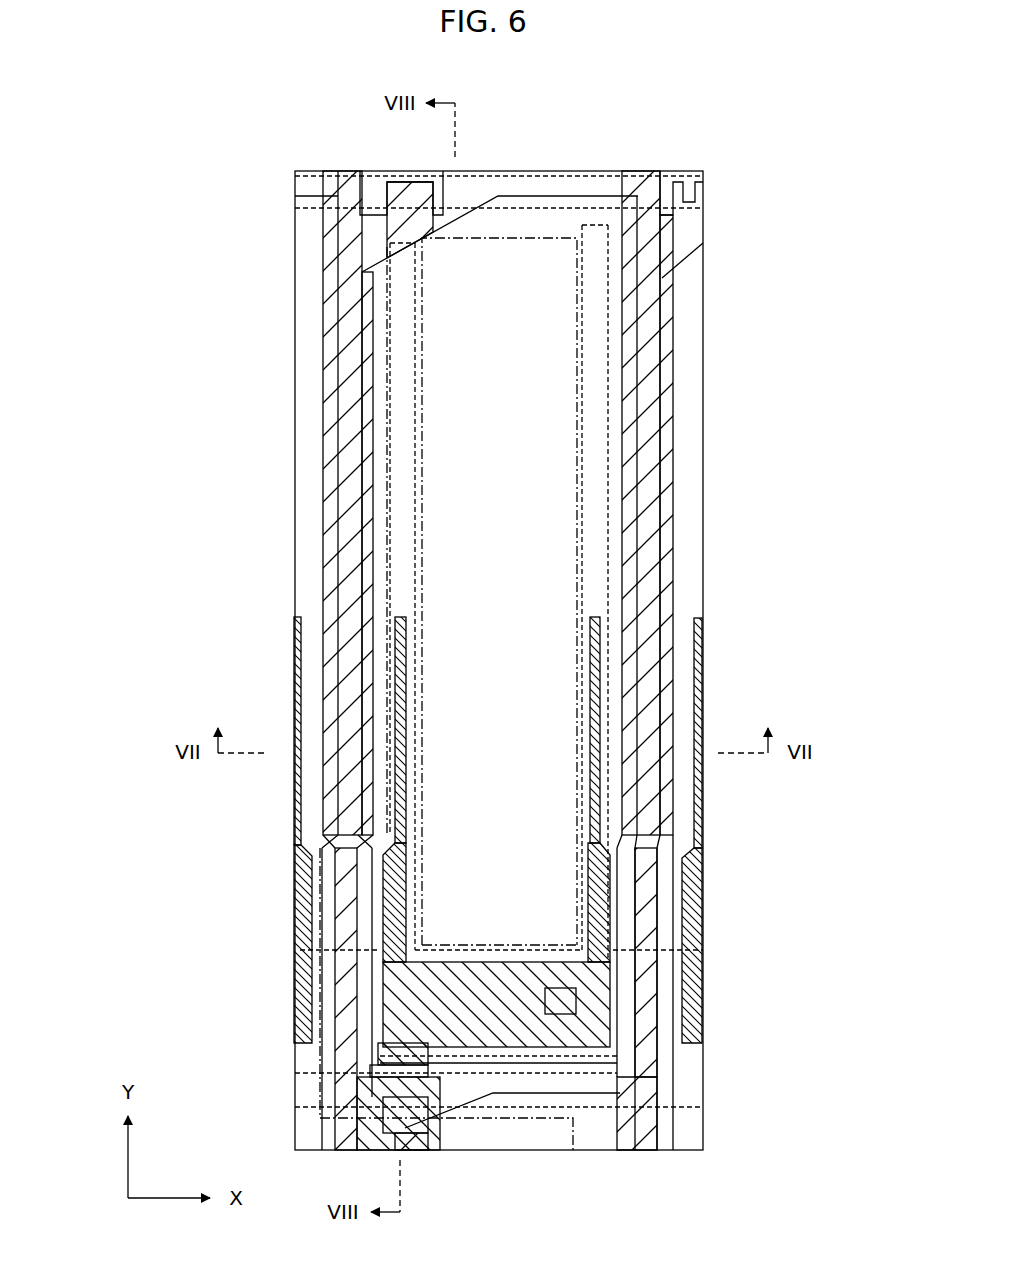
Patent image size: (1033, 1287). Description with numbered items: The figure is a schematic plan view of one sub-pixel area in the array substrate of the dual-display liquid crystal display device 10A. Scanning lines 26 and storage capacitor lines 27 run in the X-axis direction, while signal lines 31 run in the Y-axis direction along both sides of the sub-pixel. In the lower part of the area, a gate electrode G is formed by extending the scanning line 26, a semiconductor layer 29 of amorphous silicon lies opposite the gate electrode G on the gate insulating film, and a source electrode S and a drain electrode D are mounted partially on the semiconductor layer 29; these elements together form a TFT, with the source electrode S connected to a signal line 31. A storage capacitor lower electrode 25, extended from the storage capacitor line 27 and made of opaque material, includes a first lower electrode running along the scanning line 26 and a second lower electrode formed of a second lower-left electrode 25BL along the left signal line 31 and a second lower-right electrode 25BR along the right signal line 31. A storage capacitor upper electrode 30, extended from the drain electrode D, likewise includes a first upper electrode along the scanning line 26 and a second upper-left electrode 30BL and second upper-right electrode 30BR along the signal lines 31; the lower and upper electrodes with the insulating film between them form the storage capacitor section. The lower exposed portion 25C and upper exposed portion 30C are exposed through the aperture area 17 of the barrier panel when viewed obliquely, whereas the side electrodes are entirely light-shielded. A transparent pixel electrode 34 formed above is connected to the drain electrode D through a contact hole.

The dual-display liquid crystal display device 10A is at (390, 66).
The aperture area 17 is at (531, 226).
The pixel electrode 34 is at (540, 297).
The signal line 31 is at (345, 327).
The second lower-left electrode 25BL is at (400, 578).
The second lower-right electrode 25BR is at (606, 427).
The storage capacitor lower electrode 25 is at (612, 1004).
The lower exposed portion 25C is at (540, 952).
The second upper-left electrode 30BL is at (398, 689).
The second upper-right electrode 30BR is at (596, 645).
The storage capacitor upper electrode 30 is at (518, 1040).
The upper exposed portion 30C is at (456, 973).
The storage capacitor line 27 is at (668, 932).
The scanning line 26 is at (588, 1082).
The element TFT is at (238, 1145).
The drain electrode D is at (385, 1043).
The semiconductor layer 29 is at (382, 1052).
The gate electrode G is at (400, 1094).
The source electrode S is at (405, 1073).